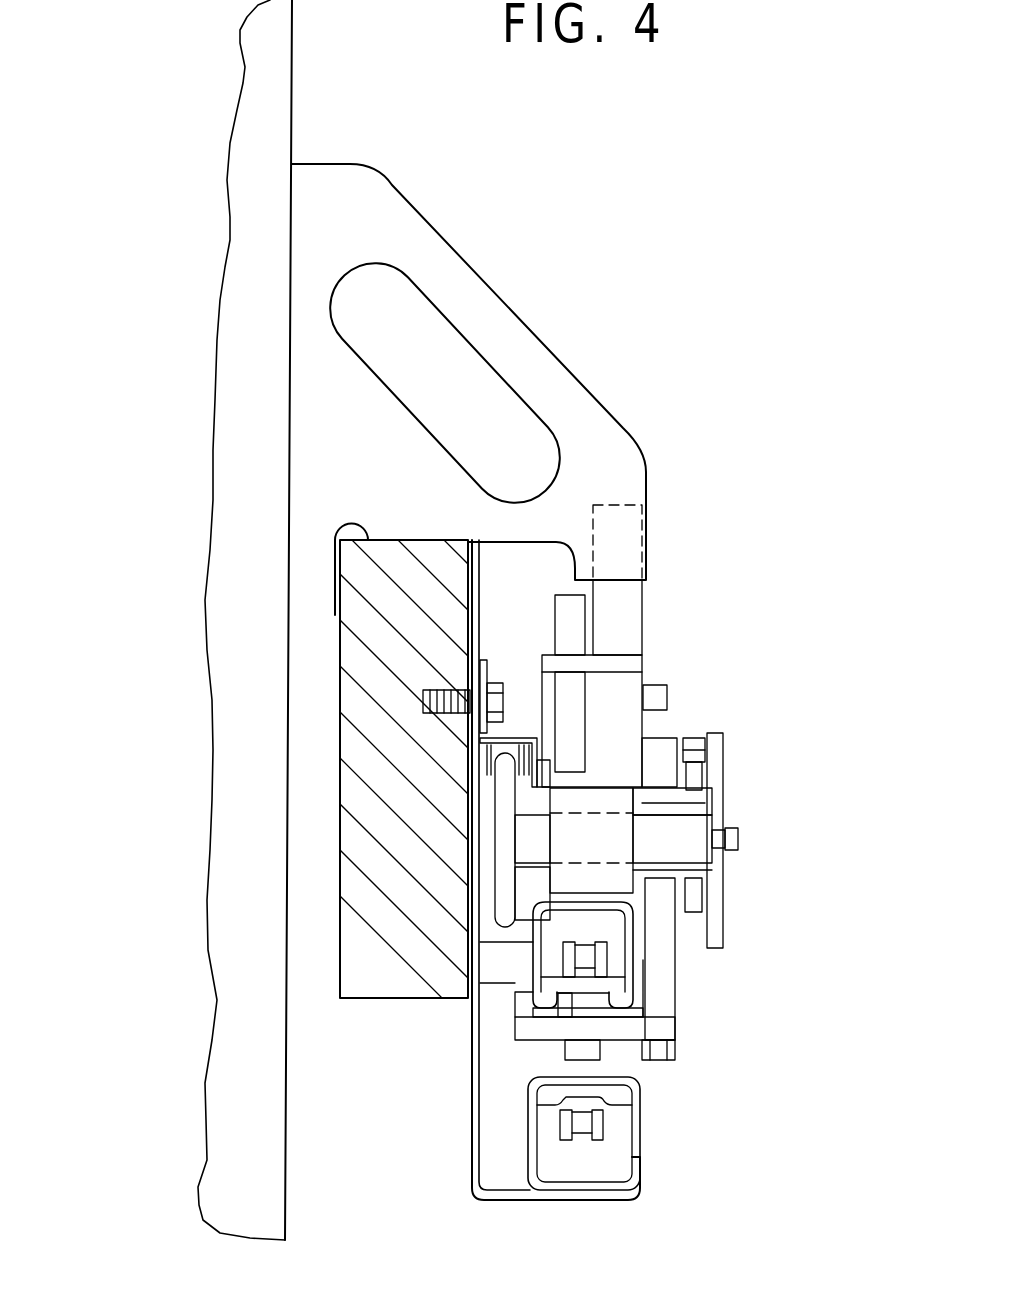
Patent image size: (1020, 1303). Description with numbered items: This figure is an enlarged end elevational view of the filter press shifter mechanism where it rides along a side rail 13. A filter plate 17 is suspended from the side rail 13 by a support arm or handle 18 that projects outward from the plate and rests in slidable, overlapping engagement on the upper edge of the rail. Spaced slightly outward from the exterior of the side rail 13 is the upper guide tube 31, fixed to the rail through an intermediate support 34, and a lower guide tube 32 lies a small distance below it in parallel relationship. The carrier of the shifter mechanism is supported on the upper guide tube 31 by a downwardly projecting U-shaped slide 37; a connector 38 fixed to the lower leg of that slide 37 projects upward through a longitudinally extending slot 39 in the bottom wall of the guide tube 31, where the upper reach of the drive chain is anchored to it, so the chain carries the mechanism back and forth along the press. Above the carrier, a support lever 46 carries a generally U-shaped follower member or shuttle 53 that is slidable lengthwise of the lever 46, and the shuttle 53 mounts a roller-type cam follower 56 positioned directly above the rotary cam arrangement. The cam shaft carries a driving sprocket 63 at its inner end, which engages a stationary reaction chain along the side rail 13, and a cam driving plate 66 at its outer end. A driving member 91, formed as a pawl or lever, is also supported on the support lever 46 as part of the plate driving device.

The filter plate 17 is at (235, 405).
The support arm or handle 18 is at (600, 438).
The side rail 13 is at (360, 885).
The intermediate support 34 is at (502, 972).
The driving sprocket 63 is at (503, 825).
The driving member 91 is at (640, 600).
The support lever 46 is at (560, 697).
The follower member or shuttle 53 is at (623, 668).
The roller-type cam follower 56 is at (660, 747).
The cam driving plate 66 is at (712, 913).
The guide tube 31 is at (633, 963).
The U-shaped slide 37 is at (660, 998).
The connector 38 is at (588, 1007).
The slot 39 is at (568, 1017).
The guide tube 32 is at (638, 1140).